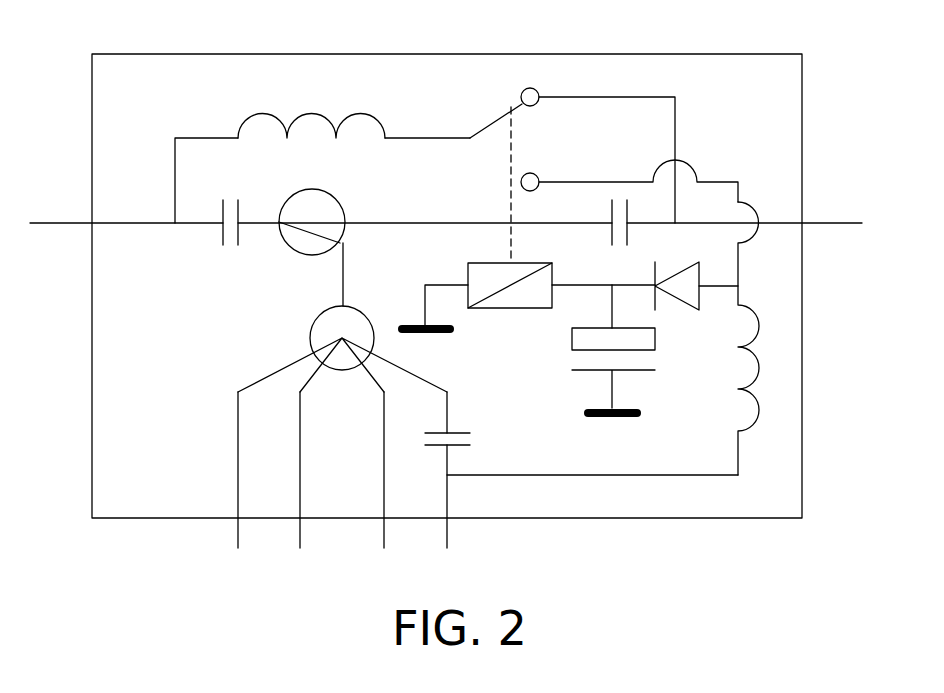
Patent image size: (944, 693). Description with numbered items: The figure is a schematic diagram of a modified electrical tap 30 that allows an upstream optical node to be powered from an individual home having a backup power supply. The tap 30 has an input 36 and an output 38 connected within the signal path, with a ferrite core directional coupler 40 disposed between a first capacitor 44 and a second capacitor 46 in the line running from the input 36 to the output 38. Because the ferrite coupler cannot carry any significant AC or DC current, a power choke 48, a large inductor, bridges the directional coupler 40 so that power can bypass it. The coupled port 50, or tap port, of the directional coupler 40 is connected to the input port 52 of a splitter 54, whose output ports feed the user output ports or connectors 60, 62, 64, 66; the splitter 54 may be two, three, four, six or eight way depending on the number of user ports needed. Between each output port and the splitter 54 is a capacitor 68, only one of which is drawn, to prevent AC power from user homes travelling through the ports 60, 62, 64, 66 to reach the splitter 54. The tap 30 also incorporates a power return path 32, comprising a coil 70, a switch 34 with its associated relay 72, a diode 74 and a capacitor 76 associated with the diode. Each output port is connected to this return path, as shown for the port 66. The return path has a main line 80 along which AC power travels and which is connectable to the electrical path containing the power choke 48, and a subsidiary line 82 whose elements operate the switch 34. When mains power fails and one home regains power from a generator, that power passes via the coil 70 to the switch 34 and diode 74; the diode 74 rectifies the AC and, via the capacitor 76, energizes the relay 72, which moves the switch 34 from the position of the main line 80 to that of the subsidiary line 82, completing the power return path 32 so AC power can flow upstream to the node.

The tap 30 is at (803, 109).
The power return path 32 is at (740, 455).
The switch 34 is at (492, 122).
The input 36 is at (62, 226).
The output 38 is at (804, 221).
The directional coupler 40 is at (333, 196).
The capacitor 44 is at (222, 240).
The capacitor 46 is at (630, 235).
The power choke 48 is at (263, 113).
The coupled port 50 is at (336, 248).
The input port 52 is at (345, 307).
The splitter 54 is at (310, 330).
The output port 60 is at (238, 540).
The output port 62 is at (300, 540).
The output port 64 is at (384, 540).
The output port 66 is at (447, 540).
The capacitor 68 is at (458, 432).
The coil 70 is at (765, 330).
The relay 72 is at (487, 309).
The diode 74 is at (678, 306).
The capacitor 76 is at (610, 366).
The main line 80 is at (531, 88).
The subsidiary line 82 is at (537, 175).